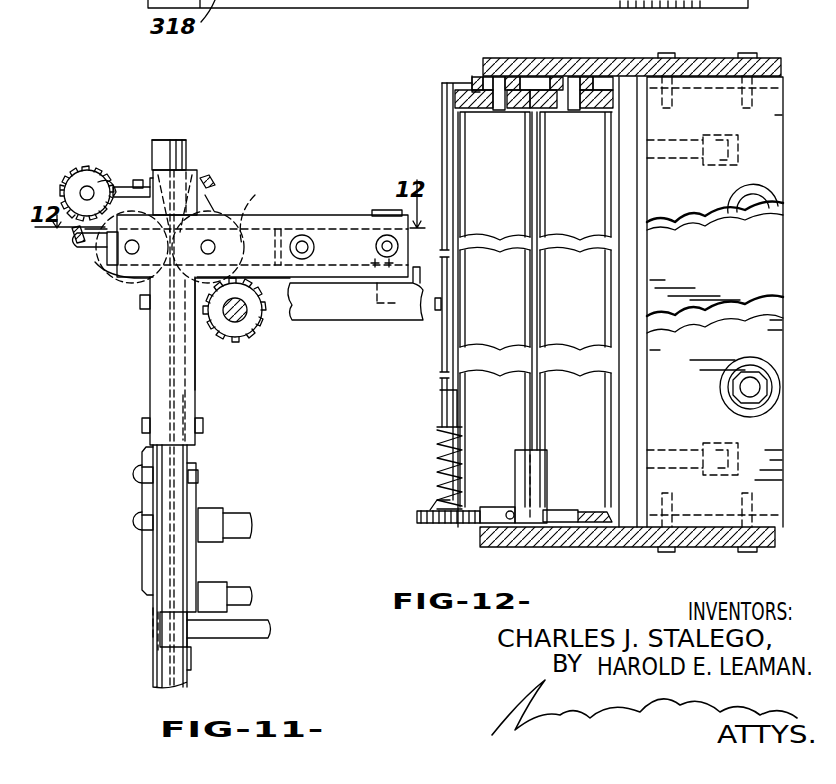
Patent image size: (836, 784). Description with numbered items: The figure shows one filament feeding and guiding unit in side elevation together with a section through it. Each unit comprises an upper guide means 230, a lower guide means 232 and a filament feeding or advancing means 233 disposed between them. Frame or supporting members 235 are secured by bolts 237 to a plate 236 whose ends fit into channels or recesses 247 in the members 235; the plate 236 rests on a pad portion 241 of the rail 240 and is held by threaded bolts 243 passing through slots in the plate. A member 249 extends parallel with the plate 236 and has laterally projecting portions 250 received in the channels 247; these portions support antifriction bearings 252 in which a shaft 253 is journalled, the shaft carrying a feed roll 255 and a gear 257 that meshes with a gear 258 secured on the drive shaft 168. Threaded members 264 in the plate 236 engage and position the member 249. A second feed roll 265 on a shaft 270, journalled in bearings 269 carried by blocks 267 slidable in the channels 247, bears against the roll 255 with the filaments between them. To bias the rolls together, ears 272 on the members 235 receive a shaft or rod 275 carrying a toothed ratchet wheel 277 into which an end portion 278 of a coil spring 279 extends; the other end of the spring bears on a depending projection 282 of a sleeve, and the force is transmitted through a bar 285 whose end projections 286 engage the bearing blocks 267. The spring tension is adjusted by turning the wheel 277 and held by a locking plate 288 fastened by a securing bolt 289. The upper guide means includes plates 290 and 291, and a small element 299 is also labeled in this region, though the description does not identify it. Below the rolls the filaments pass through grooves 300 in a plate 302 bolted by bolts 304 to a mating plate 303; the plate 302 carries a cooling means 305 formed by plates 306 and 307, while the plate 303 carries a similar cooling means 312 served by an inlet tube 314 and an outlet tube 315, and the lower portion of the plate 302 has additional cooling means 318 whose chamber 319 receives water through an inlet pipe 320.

In FIG. 11, the drive shaft 168 is at (245, 318).
In FIG. 11, the upper guide means 230 is at (202, 129).
In FIG. 12, the upper guide means 230 is at (549, 444).
In FIG. 11, the lower guide means 232 is at (201, 484).
In FIG. 11, the filament feeding or advancing means 233 is at (124, 297).
In FIG. 12, the filament feeding or advancing means 233 is at (446, 414).
In FIG. 11, the frame or supporting members 235 is at (196, 378).
In FIG. 12, the frame or supporting members 235 is at (698, 60).
In FIG. 12, the plate or member 236 is at (748, 267).
In FIG. 12, the bolts 237 is at (690, 46).
In FIG. 11, the rail or bar 240 is at (342, 312).
In FIG. 11, the pad portions 241 is at (400, 278).
In FIG. 11, the threaded members or bolts 243 is at (384, 210).
In FIG. 12, the threaded members or bolts 243 is at (726, 200).
In FIG. 11, the channels or recesses 247 is at (273, 218).
In FIG. 12, the channels or recesses 247 is at (540, 77).
In FIG. 11, the member 249 is at (274, 206).
In FIG. 12, the member 249 is at (610, 76).
In FIG. 12, the laterally projecting portions 250 is at (605, 52).
In FIG. 12, the antifriction bearings 252 is at (578, 77).
In FIG. 12, the shaft 253 is at (575, 112).
In FIG. 11, the feed roll 255 is at (222, 205).
In FIG. 12, the feed roll 255 is at (593, 321).
In FIG. 11, the gear 257 is at (204, 205).
In FIG. 12, the gear 257 is at (535, 90).
In FIG. 11, the gear 258 is at (220, 330).
In FIG. 12, the threaded members 264 is at (645, 155).
In FIG. 11, the second feed roll 265 is at (115, 278).
In FIG. 12, the second feed roll 265 is at (518, 318).
In FIG. 12, the blocks or elements 267 is at (473, 80).
In FIG. 12, the bearings 269 is at (455, 100).
In FIG. 11, the shaft 270 is at (125, 285).
In FIG. 12, the shaft 270 is at (500, 112).
In FIG. 11, the projecting portions or ears 272 is at (75, 185).
In FIG. 11, the shaft or rod 275 is at (84, 187).
In FIG. 12, the shaft or rod 275 is at (440, 482).
In FIG. 11, the toothed wheel or ratchet member 277 is at (113, 185).
In FIG. 12, the toothed wheel or ratchet member 277 is at (420, 523).
In FIG. 12, the end portion of coil spring 278 is at (432, 503).
In FIG. 12, the coil spring 279 is at (440, 458).
In FIG. 11, the depending portion or projection 282 is at (72, 250).
In FIG. 12, the depending portion or projection 282 is at (436, 312).
In FIG. 11, the bar 285 is at (95, 262).
In FIG. 12, the bar 285 is at (440, 140).
In FIG. 11, the portions or projections 286 is at (112, 270).
In FIG. 12, the portions or projections 286 is at (442, 83).
In FIG. 11, the plate, detent or lock 288 is at (120, 180).
In FIG. 11, the securing bolt 289 is at (130, 188).
In FIG. 11, the plate or member 290 is at (197, 152).
In FIG. 12, the plate or member 290 is at (548, 466).
In FIG. 11, the plate 291 is at (160, 140).
In FIG. 12, the plate 291 is at (518, 462).
In FIG. 11, the pin 299 is at (225, 174).
In FIG. 11, the grooves 300 is at (168, 372).
In FIG. 11, the plate 302 is at (155, 382).
In FIG. 11, the mating plate 303 is at (183, 400).
In FIG. 11, the bolts 304 is at (145, 312).
In FIG. 11, the cooling means 305 is at (132, 516).
In FIG. 11, the plate 306 is at (150, 486).
In FIG. 11, the outermost plate 307 is at (145, 455).
In FIG. 11, the cooling means 312 is at (198, 563).
In FIG. 11, the inlet tube 314 is at (243, 590).
In FIG. 11, the outlet tube 315 is at (235, 518).
In FIG. 11, the additional cooling means 318 is at (162, 645).
In FIG. 11, the chamber 319 is at (155, 625).
In FIG. 11, the inlet pipe 320 is at (245, 632).